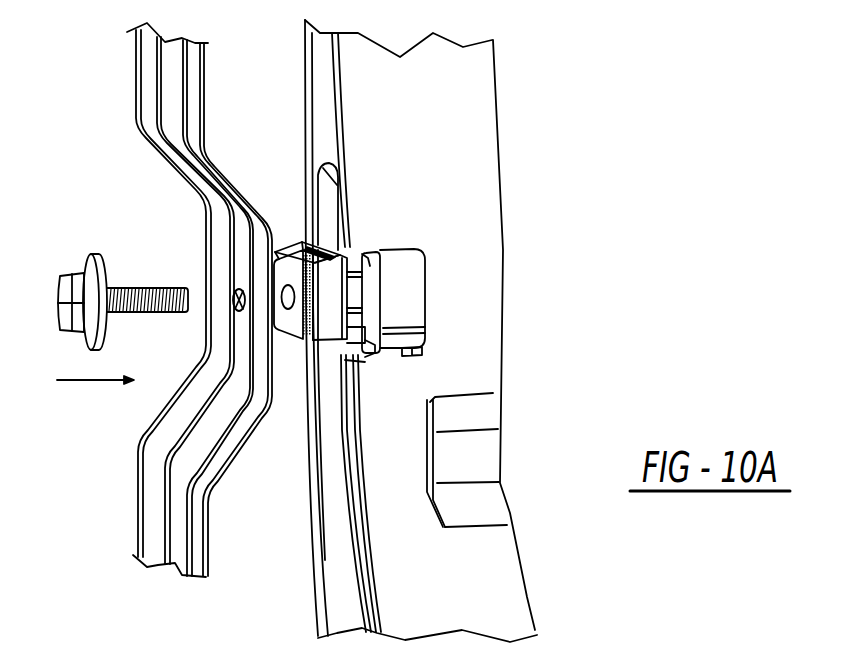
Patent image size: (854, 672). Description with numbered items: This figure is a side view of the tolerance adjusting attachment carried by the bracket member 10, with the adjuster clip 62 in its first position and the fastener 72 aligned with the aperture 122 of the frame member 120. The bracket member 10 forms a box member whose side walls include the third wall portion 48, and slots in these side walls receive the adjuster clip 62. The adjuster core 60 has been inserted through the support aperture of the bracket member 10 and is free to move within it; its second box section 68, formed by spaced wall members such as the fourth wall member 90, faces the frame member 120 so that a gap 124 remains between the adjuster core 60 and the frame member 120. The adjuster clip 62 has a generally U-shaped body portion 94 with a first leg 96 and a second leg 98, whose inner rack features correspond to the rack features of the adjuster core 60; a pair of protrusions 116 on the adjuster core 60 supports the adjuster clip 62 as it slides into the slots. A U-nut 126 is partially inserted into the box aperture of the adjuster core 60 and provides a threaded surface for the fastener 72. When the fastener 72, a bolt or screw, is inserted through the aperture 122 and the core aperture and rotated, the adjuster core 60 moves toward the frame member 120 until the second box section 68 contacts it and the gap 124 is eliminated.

The bracket member 10 is at (460, 123).
The third wall portion 48 is at (365, 230).
The adjuster core 60 is at (295, 200).
The adjuster clip 62 is at (442, 255).
The second box section 68 is at (302, 368).
The fastener 72 is at (80, 292).
The fourth wall member 90 is at (320, 315).
The U-shaped body portion 94 is at (398, 268).
The first leg 96 is at (378, 256).
The second leg 98 is at (377, 343).
The protrusions 116 is at (385, 360).
The frame member 120 is at (183, 167).
The aperture 122 is at (238, 308).
The gap 124 is at (278, 220).
The U-nut 126 is at (340, 235).